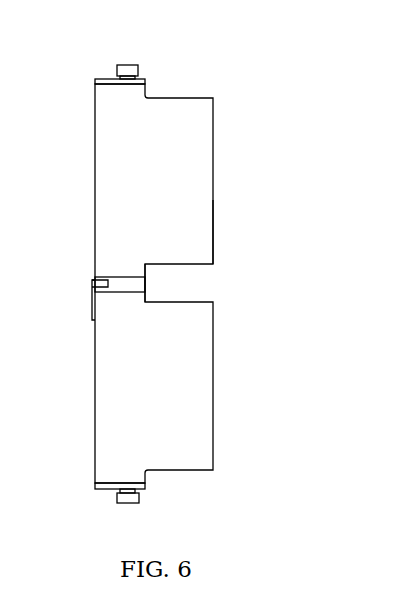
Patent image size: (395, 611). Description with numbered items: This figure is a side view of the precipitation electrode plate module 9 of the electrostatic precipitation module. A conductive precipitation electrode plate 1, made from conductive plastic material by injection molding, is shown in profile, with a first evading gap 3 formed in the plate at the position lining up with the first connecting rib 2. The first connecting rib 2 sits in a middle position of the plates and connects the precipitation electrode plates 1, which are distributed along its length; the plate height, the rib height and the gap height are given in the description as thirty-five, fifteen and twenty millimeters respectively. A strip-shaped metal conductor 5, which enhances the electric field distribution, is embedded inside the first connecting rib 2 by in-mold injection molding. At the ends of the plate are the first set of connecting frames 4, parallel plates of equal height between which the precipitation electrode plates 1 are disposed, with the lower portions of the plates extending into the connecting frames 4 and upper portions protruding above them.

The conductive precipitation electrode plate 1 is at (202, 192).
The first connecting rib 2 is at (120, 280).
The first evading gap 3 is at (190, 286).
The first set of connecting frames 4 is at (107, 80).
The metal conductor 5 is at (92, 282).
The precipitation electrode plate module 9 is at (255, 222).